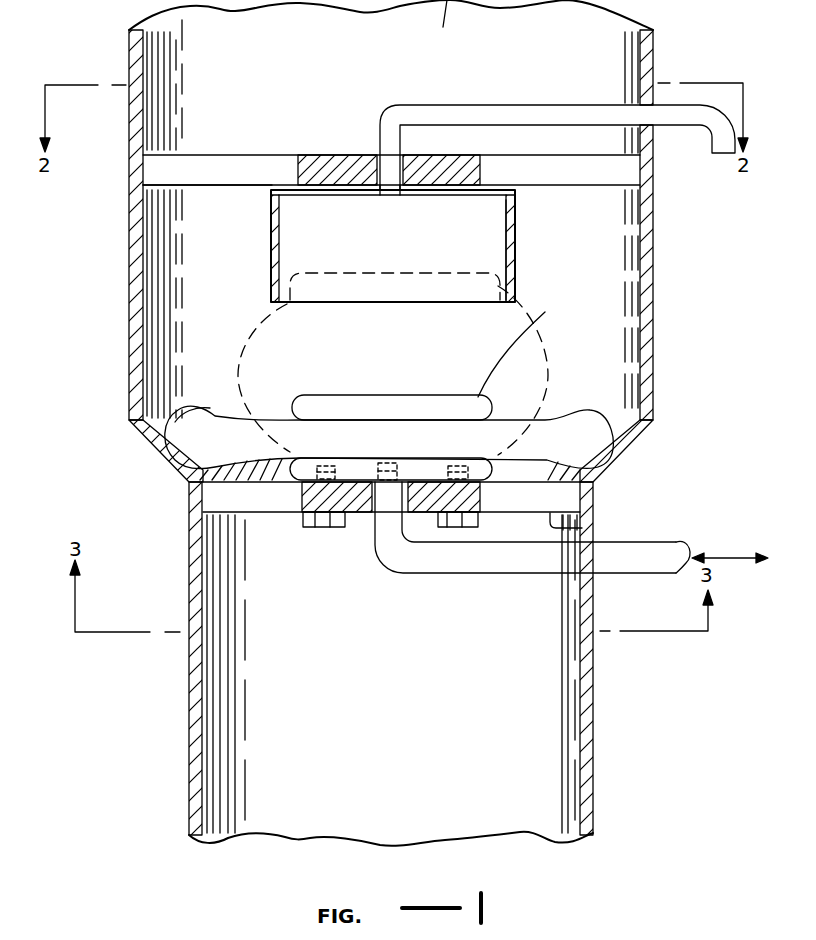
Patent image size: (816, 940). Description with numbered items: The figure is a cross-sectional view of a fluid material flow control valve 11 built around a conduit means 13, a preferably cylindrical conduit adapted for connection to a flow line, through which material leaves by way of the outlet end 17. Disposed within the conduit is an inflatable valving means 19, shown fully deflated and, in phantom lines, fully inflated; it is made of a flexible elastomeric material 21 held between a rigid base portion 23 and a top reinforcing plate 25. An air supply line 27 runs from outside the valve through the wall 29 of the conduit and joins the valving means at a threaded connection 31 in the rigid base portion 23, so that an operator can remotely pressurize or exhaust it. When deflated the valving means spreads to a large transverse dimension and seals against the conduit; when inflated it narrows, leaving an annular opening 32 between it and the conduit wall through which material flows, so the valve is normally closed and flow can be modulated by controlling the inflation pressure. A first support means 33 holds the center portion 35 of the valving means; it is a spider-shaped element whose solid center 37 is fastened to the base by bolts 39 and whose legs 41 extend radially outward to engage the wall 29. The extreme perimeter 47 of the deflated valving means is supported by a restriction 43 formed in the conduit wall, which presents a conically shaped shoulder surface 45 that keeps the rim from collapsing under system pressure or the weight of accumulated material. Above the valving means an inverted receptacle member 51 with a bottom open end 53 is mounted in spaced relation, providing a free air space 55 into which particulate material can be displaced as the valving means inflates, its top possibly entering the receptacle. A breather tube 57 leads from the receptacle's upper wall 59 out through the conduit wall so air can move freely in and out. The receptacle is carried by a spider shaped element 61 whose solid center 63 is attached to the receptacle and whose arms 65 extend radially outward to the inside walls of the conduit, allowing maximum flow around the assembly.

The fluid material flow control valve 11 is at (722, 276).
The conduit means 13 is at (133, 406).
The outlet end 17 is at (311, 822).
The inflatable valving means 19 is at (596, 480).
The elastomeric material 21 is at (220, 415).
The rigid base portion 23 is at (290, 436).
The top reinforcing plate 25 is at (530, 302).
The air supply line 27 is at (646, 548).
The wall of the conduit means 29 is at (594, 612).
The threaded connection 31 is at (410, 464).
The annular opening 32 is at (603, 382).
The first support means 33 is at (594, 522).
The center portion 35 is at (376, 398).
The solid center 37 is at (360, 505).
The bolts 39 is at (323, 524).
The legs 41 is at (220, 497).
The restriction 43 is at (152, 420).
The shoulder surface 45 is at (166, 416).
The perimeter 47 is at (188, 458).
The inverted receptacle member 51 is at (271, 250).
The bottom open end 53 is at (395, 313).
The free air space 55 is at (452, 231).
The breather tube 57 is at (477, 119).
The upper wall 59 is at (363, 197).
The spider shaped element 61 is at (253, 156).
The solid center 63 is at (322, 156).
The arms 65 is at (224, 172).